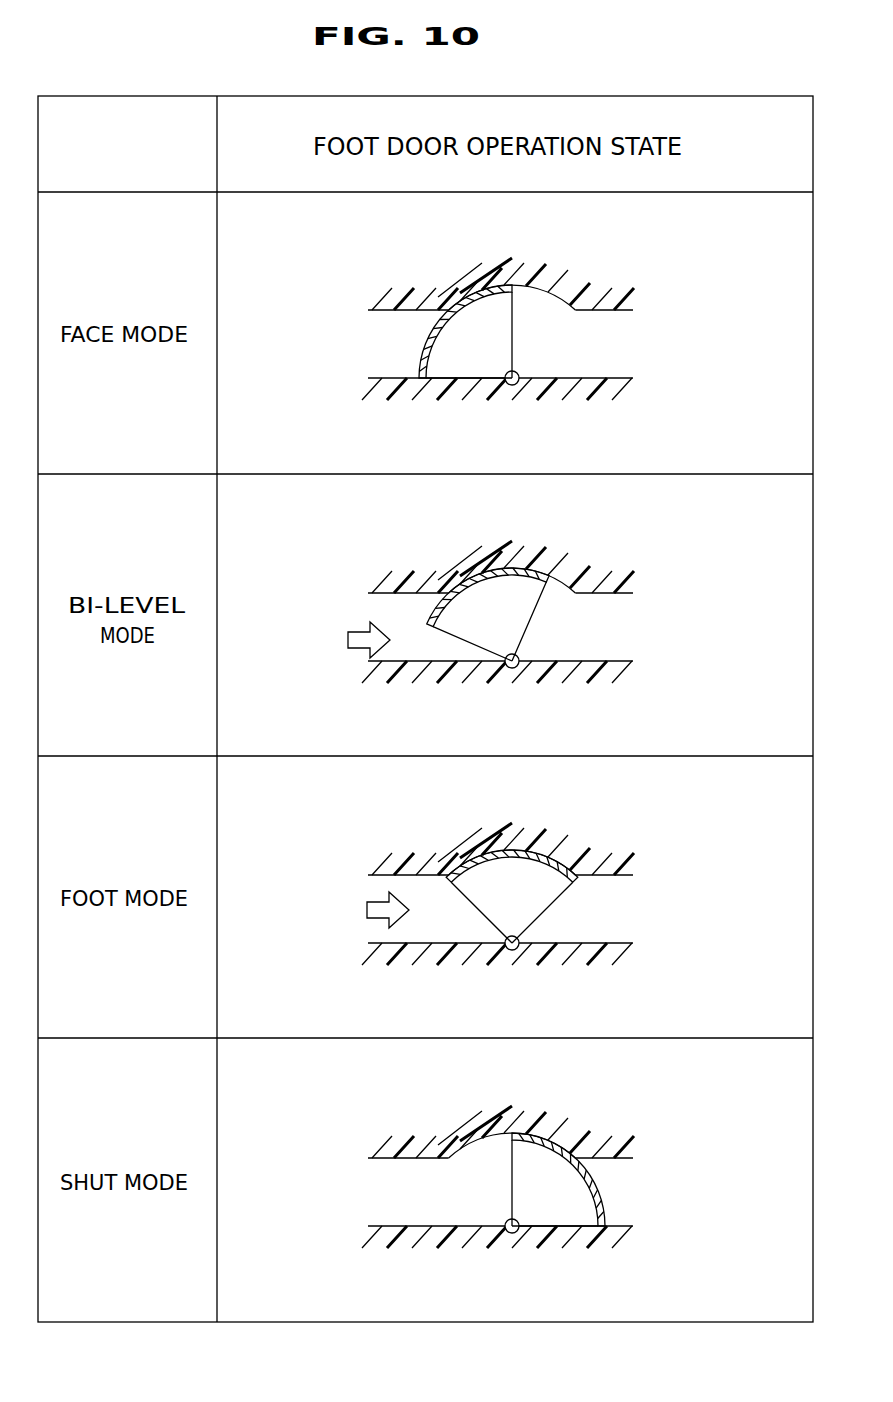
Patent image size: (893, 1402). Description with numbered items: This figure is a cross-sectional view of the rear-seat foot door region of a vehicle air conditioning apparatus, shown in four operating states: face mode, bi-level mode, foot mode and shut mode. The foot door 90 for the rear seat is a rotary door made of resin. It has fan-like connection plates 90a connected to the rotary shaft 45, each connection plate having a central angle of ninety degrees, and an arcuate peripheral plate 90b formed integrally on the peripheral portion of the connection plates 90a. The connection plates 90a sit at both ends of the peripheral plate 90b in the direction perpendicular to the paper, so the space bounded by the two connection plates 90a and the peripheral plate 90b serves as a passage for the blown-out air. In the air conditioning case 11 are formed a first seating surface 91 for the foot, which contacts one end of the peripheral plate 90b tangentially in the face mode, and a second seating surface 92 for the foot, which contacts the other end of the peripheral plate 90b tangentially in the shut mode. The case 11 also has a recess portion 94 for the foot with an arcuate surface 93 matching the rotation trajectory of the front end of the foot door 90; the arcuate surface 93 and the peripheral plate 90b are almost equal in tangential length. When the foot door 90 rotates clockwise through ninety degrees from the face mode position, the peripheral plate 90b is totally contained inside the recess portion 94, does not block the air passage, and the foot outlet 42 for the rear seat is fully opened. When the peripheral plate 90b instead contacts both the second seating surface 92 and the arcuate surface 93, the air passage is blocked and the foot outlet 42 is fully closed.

The air conditioning case 11 is at (448, 292).
The foot outlet for the rear seat 42 is at (597, 352).
The rotary shaft 45 is at (512, 386).
The foot door for the rear seat 90 is at (408, 352).
The connection plates 90a is at (460, 360).
The peripheral plate 90b is at (407, 373).
The first seating surface for the foot 91 is at (420, 382).
The second seating surface for the foot 92 is at (575, 380).
The arcuate surface 93 is at (555, 283).
The recess portion for the foot 94 is at (548, 300).